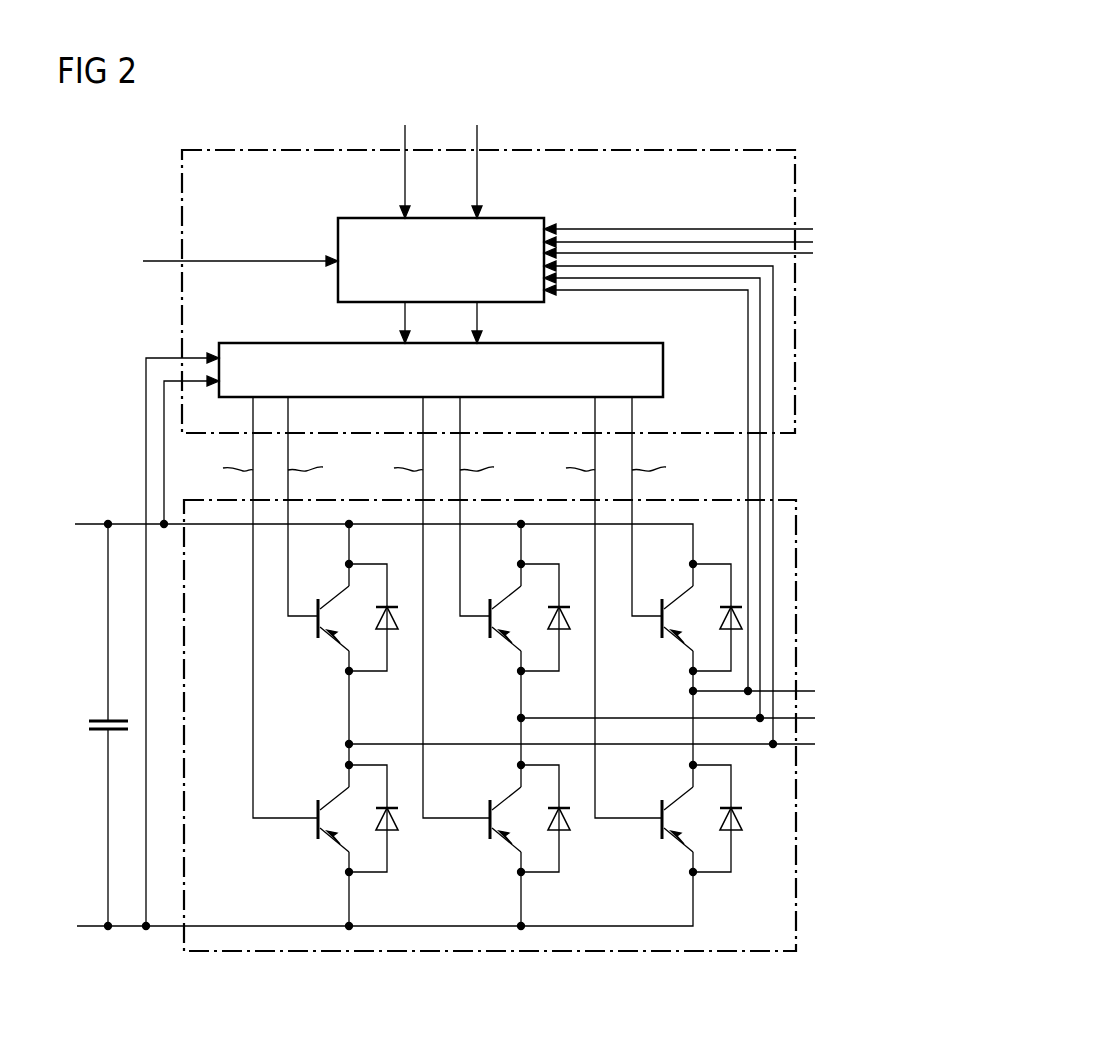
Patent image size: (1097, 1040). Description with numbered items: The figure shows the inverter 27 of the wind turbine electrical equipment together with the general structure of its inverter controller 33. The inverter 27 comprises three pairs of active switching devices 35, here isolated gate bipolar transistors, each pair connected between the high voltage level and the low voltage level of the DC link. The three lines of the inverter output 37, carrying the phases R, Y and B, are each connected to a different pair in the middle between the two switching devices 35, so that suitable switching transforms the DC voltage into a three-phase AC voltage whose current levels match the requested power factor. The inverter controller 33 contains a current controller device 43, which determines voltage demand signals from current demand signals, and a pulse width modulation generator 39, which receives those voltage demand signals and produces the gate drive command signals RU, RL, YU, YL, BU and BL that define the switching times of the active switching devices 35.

The inverter 27 is at (493, 952).
The inverter controller 33 is at (650, 150).
The active switching devices 35 is at (502, 740).
The inverter output 37 is at (824, 664).
The pulse width modulation generator 39 is at (663, 368).
The current controller device 43 is at (440, 218).